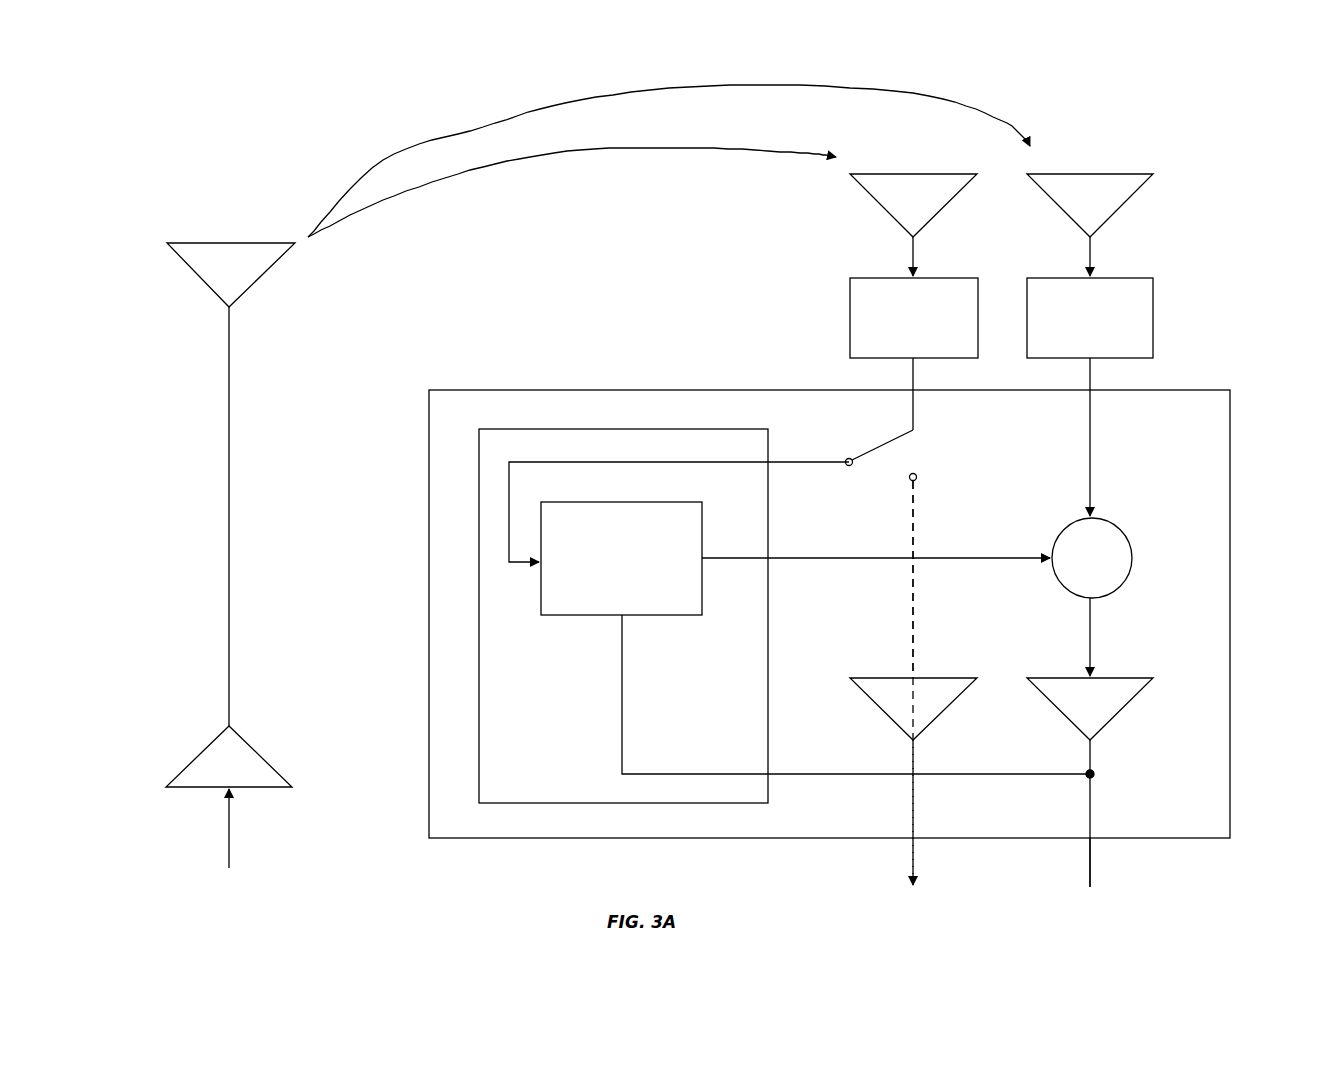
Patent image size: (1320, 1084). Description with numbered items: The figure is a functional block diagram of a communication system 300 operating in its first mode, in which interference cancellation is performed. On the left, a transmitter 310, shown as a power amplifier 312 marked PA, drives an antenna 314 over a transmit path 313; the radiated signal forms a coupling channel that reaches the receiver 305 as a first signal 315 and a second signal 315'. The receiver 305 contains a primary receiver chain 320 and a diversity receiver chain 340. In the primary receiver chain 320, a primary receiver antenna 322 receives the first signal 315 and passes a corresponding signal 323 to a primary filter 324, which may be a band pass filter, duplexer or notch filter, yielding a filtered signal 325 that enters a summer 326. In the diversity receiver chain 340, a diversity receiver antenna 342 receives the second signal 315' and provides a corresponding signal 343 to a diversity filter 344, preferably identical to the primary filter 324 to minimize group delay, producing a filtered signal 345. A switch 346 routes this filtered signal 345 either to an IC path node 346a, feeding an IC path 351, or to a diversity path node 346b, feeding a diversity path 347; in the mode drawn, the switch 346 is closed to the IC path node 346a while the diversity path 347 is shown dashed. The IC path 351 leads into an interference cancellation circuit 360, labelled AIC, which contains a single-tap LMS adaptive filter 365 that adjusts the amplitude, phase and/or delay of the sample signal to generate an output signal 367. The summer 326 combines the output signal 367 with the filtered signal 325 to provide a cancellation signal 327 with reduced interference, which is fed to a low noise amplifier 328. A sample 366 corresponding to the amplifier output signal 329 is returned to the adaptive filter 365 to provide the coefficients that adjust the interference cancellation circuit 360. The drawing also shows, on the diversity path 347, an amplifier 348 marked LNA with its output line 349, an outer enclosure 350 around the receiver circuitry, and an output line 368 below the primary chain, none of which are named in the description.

The communication system 300 is at (581, 236).
The receiver 305 is at (1003, 84).
The transmitter 310 is at (177, 826).
The power amplifier 312 is at (277, 769).
The transmit path 313 is at (230, 532).
The antenna 314 is at (240, 243).
The first signal 315 is at (669, 161).
The second signal 315' is at (572, 192).
The primary receiver chain 320 is at (1200, 212).
The primary receiver antenna 322 is at (1109, 174).
The corresponding signal 323 is at (1090, 254).
The primary filter 324 is at (1143, 277).
The filtered signal 325 is at (1090, 437).
The summer 326 is at (1115, 536).
The cancellation signal 327 is at (1090, 640).
The low noise amplifier 328 is at (1116, 678).
The signal 329 is at (1090, 770).
The diversity receiver chain 340 is at (843, 228).
The diversity receiver antenna 342 is at (931, 174).
The corresponding signal 343 is at (913, 254).
The diversity filter 344 is at (966, 277).
The filtered signal 345 is at (913, 387).
The switch 346 is at (922, 440).
The IC path node 346a is at (842, 457).
The diversity path node 346b is at (914, 475).
The diversity path 347 is at (913, 535).
The auxiliary low noise amplifier 348 is at (941, 678).
The auxiliary LNA output 349 is at (914, 770).
The receiver circuit 350 is at (1189, 837).
The IC path 351 is at (789, 465).
The interference cancellation circuit 360 is at (730, 804).
The adaptive filter 365 is at (672, 615).
The sample 366 is at (988, 773).
The output signal 367 is at (820, 560).
The receiver output 368 is at (1090, 875).